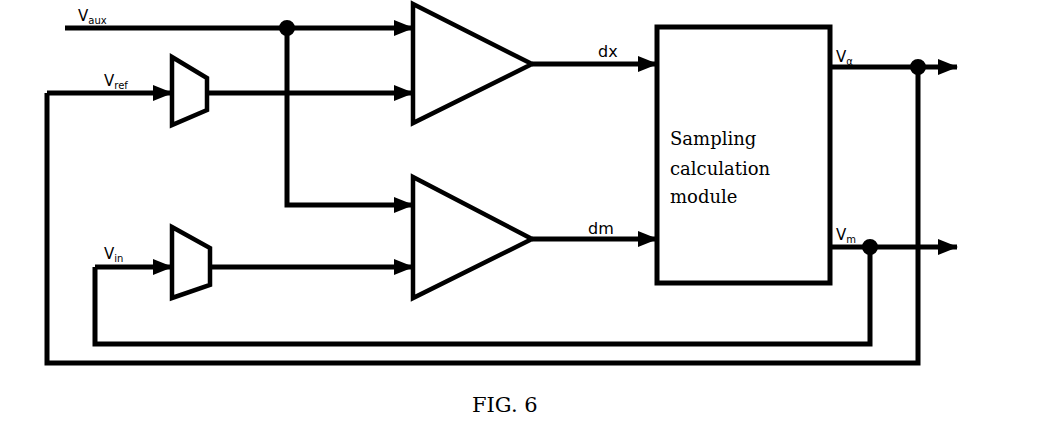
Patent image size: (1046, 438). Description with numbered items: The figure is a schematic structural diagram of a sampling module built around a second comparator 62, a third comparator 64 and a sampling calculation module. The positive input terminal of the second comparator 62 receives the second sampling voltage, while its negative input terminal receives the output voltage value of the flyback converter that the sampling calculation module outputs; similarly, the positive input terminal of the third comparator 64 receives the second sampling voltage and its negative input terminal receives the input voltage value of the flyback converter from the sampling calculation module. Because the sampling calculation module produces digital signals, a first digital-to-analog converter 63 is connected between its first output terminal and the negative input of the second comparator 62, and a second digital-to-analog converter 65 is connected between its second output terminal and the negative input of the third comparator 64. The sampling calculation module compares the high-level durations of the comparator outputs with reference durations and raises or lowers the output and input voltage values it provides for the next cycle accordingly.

The second comparator 62 is at (480, 30).
The first digital-to-analog converter 63 is at (197, 62).
The third comparator 64 is at (476, 200).
The second digital-to-analog converter 65 is at (203, 241).